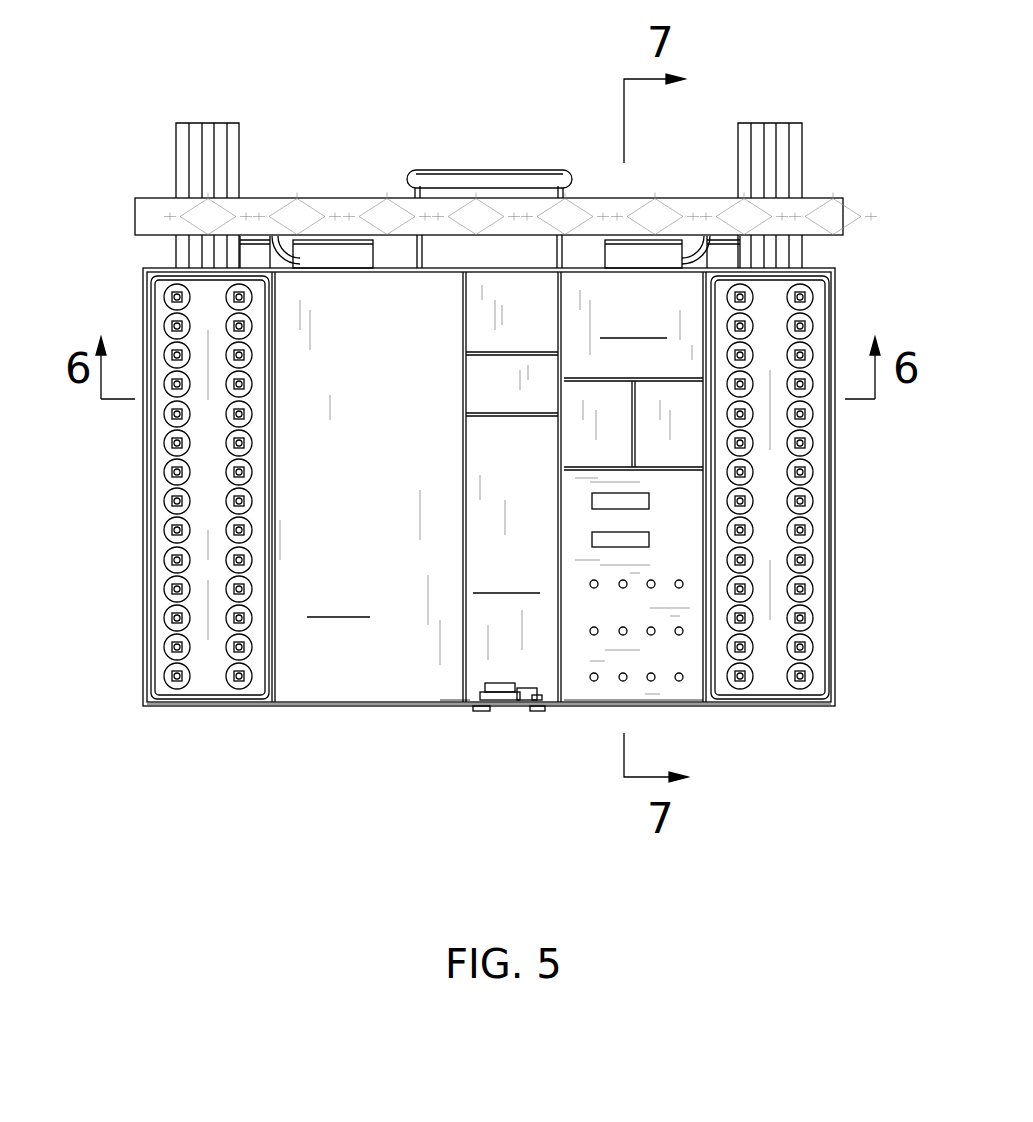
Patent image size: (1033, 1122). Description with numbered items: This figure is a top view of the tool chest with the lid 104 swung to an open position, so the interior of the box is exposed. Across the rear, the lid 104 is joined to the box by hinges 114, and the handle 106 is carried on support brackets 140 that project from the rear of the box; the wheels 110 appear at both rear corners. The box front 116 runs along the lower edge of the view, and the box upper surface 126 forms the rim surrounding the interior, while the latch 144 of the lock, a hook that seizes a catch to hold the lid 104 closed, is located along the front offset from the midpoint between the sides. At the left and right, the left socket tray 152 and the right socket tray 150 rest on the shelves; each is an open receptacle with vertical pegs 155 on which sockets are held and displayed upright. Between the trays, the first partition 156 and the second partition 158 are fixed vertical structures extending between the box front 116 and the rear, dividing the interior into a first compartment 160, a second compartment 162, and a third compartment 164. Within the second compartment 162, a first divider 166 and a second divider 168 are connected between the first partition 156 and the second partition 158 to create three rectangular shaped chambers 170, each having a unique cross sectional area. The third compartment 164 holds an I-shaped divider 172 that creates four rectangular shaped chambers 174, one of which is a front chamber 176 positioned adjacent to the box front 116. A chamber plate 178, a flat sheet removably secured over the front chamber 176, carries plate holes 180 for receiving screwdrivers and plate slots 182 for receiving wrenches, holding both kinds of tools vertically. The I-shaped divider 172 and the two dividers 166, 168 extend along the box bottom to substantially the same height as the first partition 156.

The lid 104 is at (284, 205).
The handle 106 is at (538, 178).
The wheels 110 is at (193, 137).
The hinges 114 is at (647, 253).
The box front 116 is at (260, 706).
The box upper surface 126 is at (143, 268).
The support brackets 140 is at (563, 252).
The latch 144 is at (488, 710).
The right socket tray 150 is at (783, 553).
The left socket tray 152 is at (203, 697).
The vertical pegs 155 is at (177, 589).
The first partition 156 is at (558, 692).
The second partition 158 is at (463, 692).
The first compartment 160 is at (356, 487).
The second compartment 162 is at (512, 487).
The third compartment 164 is at (635, 487).
The first divider 166 is at (499, 415).
The second divider 168 is at (488, 352).
The rectangular shaped chambers 170 is at (507, 300).
The I-shaped divider 172 is at (670, 468).
The rectangular shaped chambers 174 is at (680, 437).
The front chamber 176 is at (653, 700).
The chamber plate 178 is at (590, 693).
The plate holes 180 is at (651, 681).
The plate slots 182 is at (636, 501).